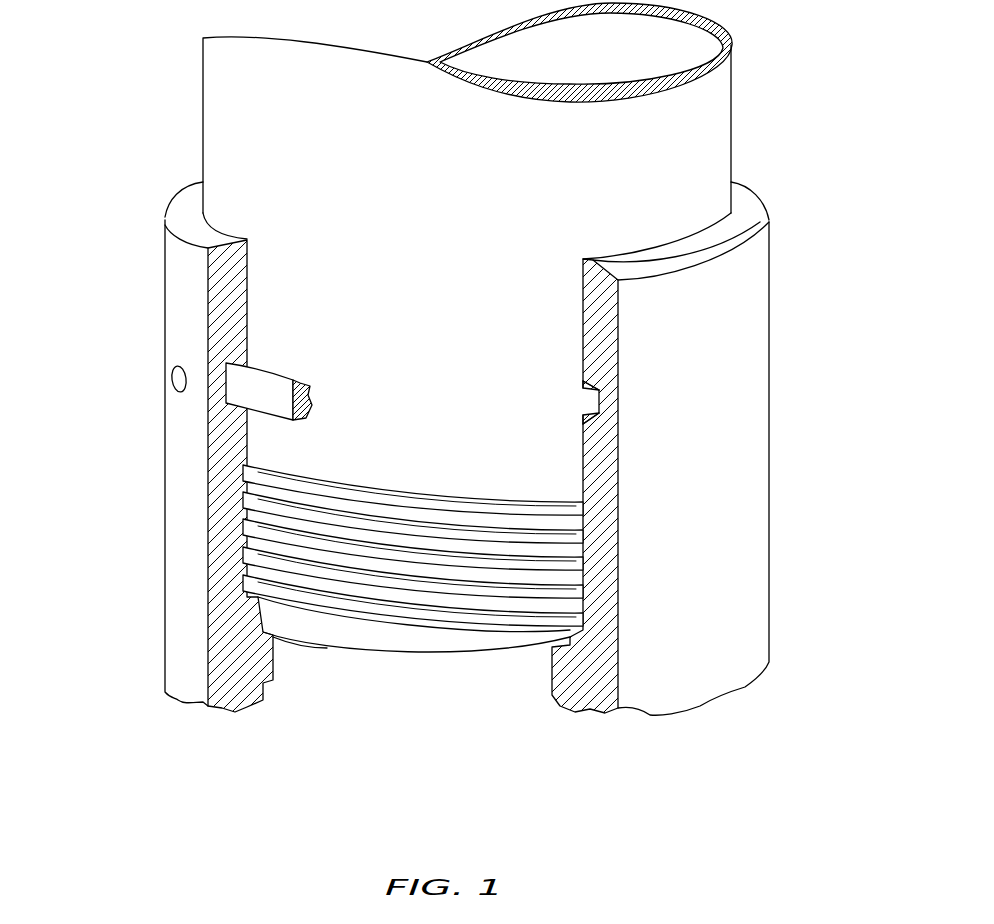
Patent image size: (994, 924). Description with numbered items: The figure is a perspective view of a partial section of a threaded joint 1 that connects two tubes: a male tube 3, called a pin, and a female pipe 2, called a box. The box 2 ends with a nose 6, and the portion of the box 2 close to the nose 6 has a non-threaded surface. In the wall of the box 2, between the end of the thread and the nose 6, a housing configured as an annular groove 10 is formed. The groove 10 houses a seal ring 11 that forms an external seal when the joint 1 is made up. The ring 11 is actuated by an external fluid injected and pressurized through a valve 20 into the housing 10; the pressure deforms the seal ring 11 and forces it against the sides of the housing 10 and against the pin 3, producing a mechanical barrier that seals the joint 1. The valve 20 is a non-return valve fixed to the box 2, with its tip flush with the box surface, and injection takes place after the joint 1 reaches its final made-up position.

The threaded joint 1 is at (150, 173).
The female pipe 2 is at (752, 292).
The male tube 3 is at (225, 103).
The nose 6 is at (741, 203).
The annular groove 10 is at (585, 398).
The seal ring 11 is at (243, 393).
The valve 20 is at (175, 368).